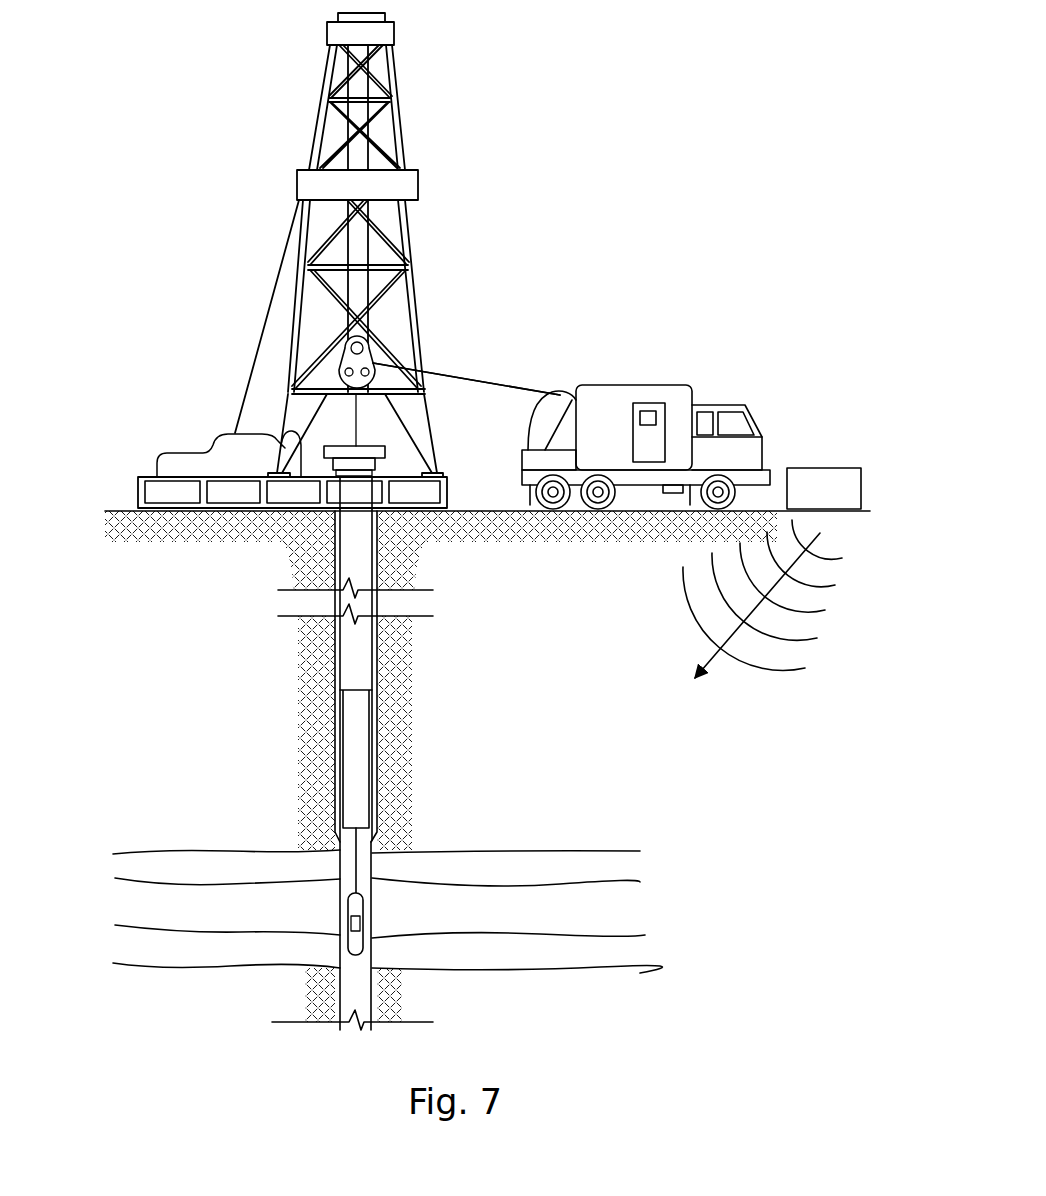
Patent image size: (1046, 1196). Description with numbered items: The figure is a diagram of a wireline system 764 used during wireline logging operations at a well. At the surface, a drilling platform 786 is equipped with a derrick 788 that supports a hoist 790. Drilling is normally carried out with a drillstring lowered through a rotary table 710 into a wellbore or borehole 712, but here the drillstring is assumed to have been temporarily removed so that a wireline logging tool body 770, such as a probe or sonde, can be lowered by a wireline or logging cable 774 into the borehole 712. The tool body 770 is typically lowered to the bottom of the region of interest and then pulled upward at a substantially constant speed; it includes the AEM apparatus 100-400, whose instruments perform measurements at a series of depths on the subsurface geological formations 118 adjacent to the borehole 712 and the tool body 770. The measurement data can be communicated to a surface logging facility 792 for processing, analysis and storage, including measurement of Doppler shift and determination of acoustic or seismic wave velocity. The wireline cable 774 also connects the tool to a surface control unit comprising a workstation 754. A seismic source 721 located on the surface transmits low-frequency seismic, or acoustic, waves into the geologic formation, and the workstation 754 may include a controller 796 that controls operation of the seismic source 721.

The wireline system 764 is at (615, 158).
The hoist 790 is at (370, 341).
The wireline or logging cable 774 is at (463, 378).
The surface logging facility 792 is at (603, 385).
The controller 796 is at (650, 410).
The workstation 754 is at (632, 442).
The rotary table 710 is at (385, 446).
The derrick 788 is at (438, 472).
The drilling platform 786 is at (448, 503).
The seismic source 721 is at (828, 468).
The wellbore or borehole 712 is at (340, 872).
The AEM apparatus 100-400 is at (362, 917).
The wireline logging tool body 770 is at (365, 946).
The subsurface geological formations 118 is at (652, 847).